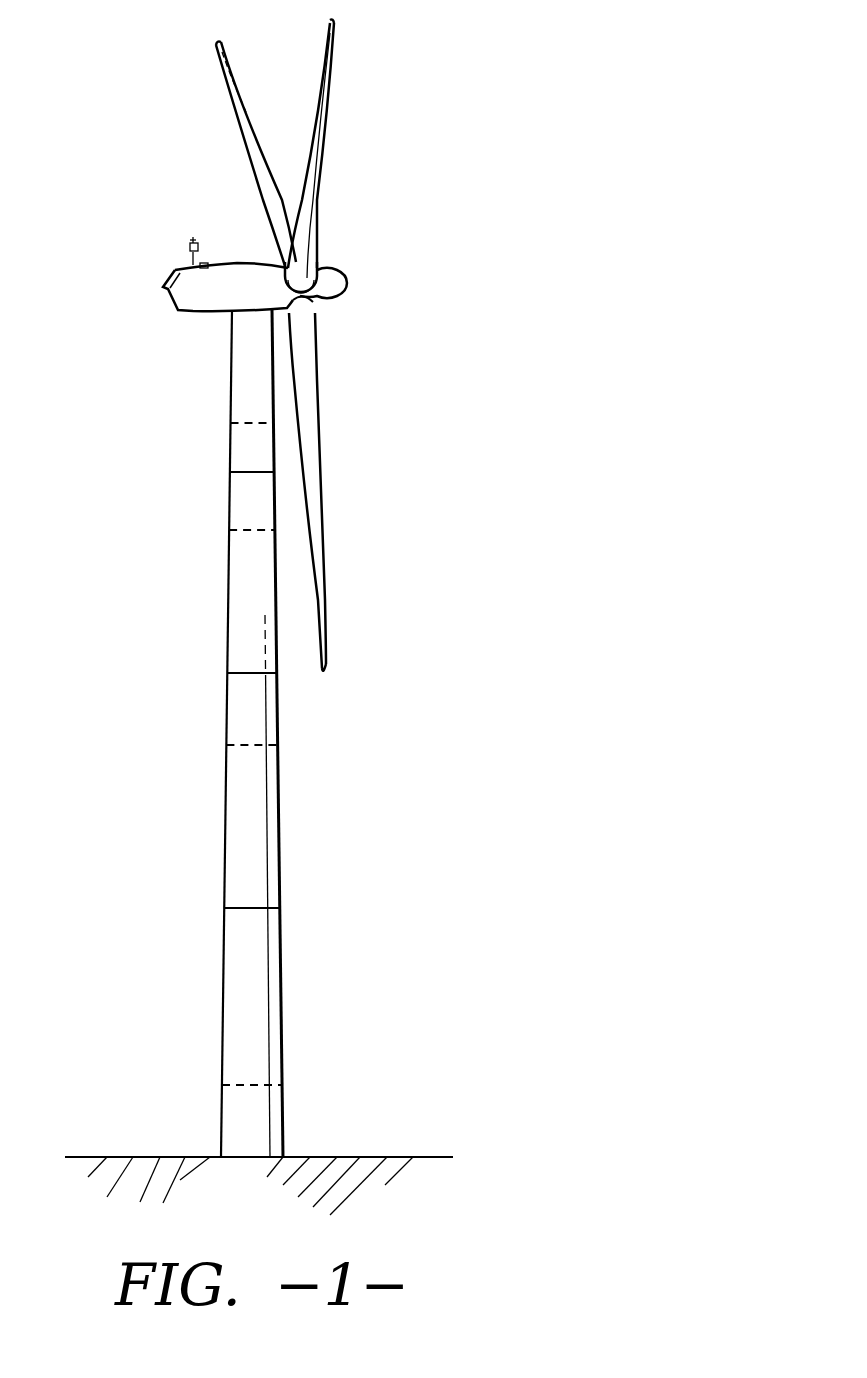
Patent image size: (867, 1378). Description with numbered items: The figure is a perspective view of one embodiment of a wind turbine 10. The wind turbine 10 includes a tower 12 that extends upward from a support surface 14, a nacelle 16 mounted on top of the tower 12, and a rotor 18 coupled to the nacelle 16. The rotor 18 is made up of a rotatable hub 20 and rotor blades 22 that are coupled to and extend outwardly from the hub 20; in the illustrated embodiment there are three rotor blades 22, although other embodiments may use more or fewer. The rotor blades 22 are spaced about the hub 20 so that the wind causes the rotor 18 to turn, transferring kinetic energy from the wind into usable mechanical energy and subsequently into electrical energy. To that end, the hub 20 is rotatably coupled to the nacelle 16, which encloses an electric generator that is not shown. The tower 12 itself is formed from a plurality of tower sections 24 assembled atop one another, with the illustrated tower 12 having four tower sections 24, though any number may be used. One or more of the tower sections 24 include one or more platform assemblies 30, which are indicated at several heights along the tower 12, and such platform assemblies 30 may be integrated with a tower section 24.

The wind turbine 10 is at (469, 61).
The tower 12 is at (222, 638).
The support surface 14 is at (148, 1157).
The nacelle 16 is at (208, 312).
The rotor 18 is at (336, 256).
The rotatable hub 20 is at (320, 293).
The rotor blade 22 is at (323, 63).
The tower section 24 is at (252, 827).
The platform assembly 30 is at (247, 423).